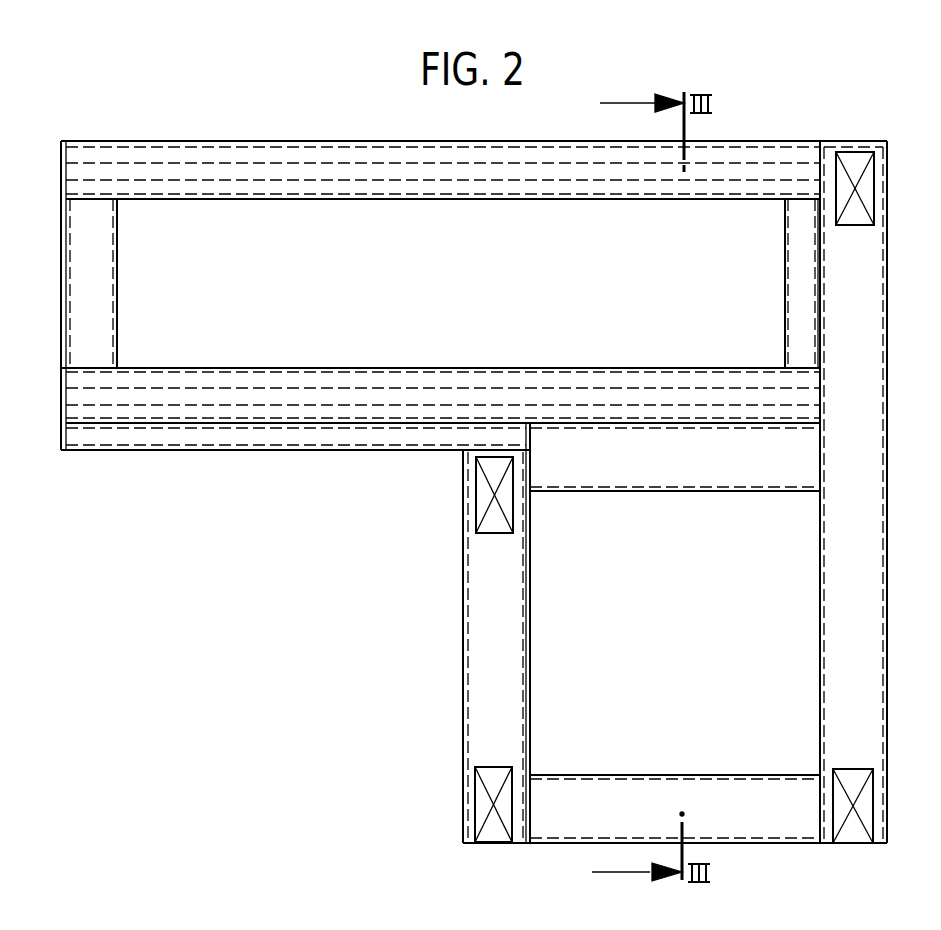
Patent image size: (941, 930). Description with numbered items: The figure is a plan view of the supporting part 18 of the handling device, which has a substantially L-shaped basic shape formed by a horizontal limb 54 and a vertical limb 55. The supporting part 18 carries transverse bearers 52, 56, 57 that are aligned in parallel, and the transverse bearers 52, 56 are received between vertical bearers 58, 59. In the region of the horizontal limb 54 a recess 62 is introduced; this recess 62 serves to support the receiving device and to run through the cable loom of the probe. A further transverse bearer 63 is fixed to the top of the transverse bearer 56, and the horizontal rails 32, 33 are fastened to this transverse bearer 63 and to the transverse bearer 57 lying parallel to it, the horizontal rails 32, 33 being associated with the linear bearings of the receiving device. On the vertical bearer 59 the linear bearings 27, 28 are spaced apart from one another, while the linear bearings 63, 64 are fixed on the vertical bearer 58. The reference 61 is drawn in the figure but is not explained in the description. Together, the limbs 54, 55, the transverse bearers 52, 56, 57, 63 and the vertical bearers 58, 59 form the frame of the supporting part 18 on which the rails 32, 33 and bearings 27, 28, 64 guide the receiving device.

The supporting part 18 is at (352, 137).
The horizontal limb 54 is at (160, 150).
The recess 62 is at (297, 218).
The horizontal rail 33 is at (205, 172).
The transverse bearer 57 is at (762, 160).
The linear bearing 28 is at (866, 190).
The vertical bearer 59 is at (868, 491).
The middle horizontal frame member 61 is at (281, 385).
The horizontal rail 32 is at (212, 400).
The transverse bearer 63 is at (481, 488).
The transverse bearer 56 is at (624, 470).
The vertical limb 55 is at (463, 578).
The vertical bearer 58 is at (481, 695).
The transverse bearer 52 is at (617, 798).
The linear bearing 64 is at (483, 798).
The linear bearing 27 is at (865, 800).